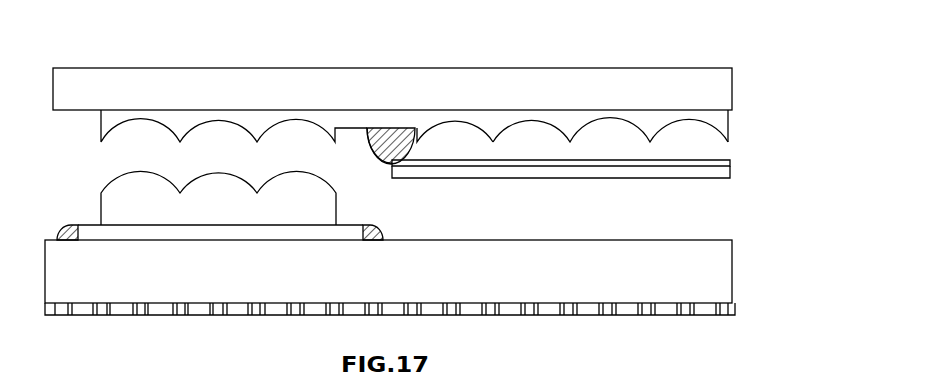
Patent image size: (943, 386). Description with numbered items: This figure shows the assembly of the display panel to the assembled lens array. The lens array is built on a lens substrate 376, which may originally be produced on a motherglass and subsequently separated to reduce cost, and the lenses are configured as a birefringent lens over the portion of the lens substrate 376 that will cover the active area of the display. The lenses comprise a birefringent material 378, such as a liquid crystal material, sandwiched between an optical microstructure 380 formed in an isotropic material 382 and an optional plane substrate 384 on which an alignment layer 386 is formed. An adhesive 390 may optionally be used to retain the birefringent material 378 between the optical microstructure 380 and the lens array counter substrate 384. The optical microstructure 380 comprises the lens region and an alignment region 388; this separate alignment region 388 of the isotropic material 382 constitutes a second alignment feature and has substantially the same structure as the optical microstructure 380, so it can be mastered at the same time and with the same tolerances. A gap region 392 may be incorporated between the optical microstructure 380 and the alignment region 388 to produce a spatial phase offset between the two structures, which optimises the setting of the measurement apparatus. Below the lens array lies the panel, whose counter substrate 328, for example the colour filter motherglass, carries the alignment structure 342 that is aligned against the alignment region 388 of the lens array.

The counter substrate 328 is at (733, 272).
The alignment structure 342 is at (142, 193).
The lens substrate 376 is at (392, 68).
The birefringent material 378 is at (447, 140).
The optical microstructure 380 is at (540, 122).
The isotropic material 382 is at (720, 108).
The plane substrate 384 is at (731, 170).
The alignment layer 386 is at (731, 162).
The alignment region 388 is at (167, 122).
The adhesive 390 is at (376, 163).
The gap region 392 is at (356, 128).